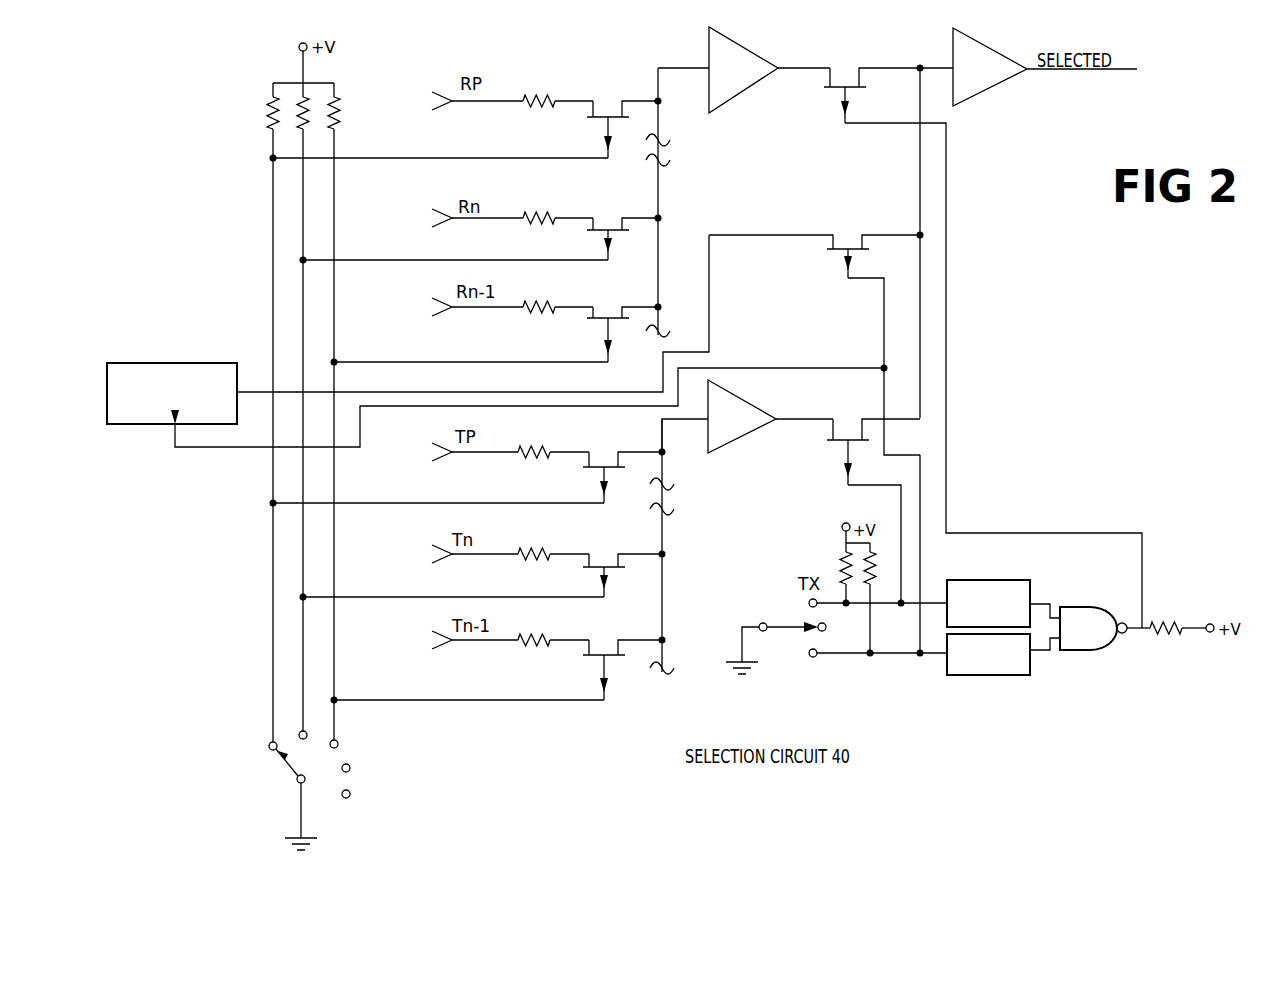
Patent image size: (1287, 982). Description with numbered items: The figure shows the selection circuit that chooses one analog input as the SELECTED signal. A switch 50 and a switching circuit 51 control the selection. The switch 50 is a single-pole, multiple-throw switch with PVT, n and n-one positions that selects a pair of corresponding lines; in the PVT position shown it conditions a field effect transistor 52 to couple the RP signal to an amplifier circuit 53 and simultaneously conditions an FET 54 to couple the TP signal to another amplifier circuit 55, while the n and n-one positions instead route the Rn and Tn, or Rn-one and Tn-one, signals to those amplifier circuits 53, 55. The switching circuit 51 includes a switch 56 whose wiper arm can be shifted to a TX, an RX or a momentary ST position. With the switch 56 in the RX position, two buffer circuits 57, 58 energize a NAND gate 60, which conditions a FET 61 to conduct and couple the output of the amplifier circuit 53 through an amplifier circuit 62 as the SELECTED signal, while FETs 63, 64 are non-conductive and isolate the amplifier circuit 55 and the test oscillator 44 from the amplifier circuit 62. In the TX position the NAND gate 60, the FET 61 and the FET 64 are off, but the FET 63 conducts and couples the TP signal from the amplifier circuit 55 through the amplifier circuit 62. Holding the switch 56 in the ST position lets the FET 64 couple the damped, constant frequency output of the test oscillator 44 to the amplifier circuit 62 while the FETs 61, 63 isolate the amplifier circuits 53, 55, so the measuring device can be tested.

The test oscillator 44 is at (194, 363).
The switch 50 is at (282, 775).
The switching circuit 51 is at (893, 671).
The field effect transistor 52 is at (609, 117).
The amplifier circuit 53 is at (746, 48).
The FET 54 is at (602, 465).
The amplifier circuit 55 is at (752, 406).
The switch 56 is at (792, 622).
The buffer circuit 57 is at (993, 580).
The buffer circuit 58 is at (1030, 662).
The NAND gate 60 is at (1096, 639).
The FET 61 is at (834, 80).
The amplifier circuit 62 is at (995, 54).
The FET 63 is at (838, 439).
The FET 64 is at (848, 233).